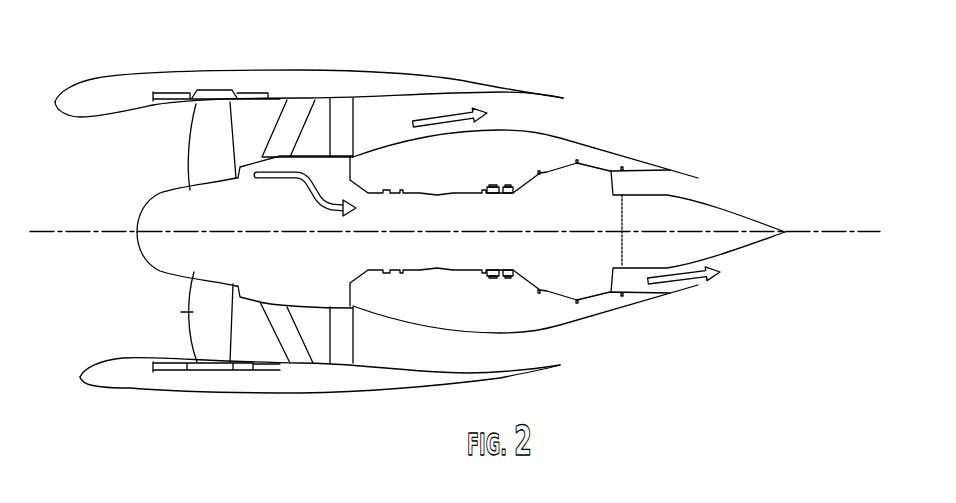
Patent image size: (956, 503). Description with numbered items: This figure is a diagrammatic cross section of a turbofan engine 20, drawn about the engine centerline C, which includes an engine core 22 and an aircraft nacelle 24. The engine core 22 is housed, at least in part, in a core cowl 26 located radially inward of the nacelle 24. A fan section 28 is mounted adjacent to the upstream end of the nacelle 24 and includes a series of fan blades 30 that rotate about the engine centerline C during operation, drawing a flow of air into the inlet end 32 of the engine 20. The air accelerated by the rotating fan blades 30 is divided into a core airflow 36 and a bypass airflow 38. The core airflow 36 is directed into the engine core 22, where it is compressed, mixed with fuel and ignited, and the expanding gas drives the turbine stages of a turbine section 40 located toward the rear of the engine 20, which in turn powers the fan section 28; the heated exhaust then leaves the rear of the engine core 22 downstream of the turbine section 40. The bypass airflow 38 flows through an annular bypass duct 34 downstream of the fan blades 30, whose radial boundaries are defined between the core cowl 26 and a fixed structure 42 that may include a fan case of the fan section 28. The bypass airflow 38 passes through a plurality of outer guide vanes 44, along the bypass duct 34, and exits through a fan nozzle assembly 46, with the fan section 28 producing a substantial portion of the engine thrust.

The turbofan engine 20 is at (711, 99).
The engine core 22 is at (447, 270).
The aircraft nacelle 24 is at (410, 71).
The core cowl 26 is at (560, 137).
The fan section 28 is at (140, 175).
The fan blades 30 is at (193, 313).
The inlet end 32 is at (85, 372).
The bypass duct 34 is at (450, 364).
The core airflow 36 is at (303, 183).
The bypass airflow 38 is at (443, 124).
The turbine section 40 is at (589, 220).
The fixed structure 42 is at (281, 103).
The outer guide vanes 44 is at (303, 360).
The fan nozzle assembly 46 is at (566, 98).
The engine centerline C is at (797, 233).